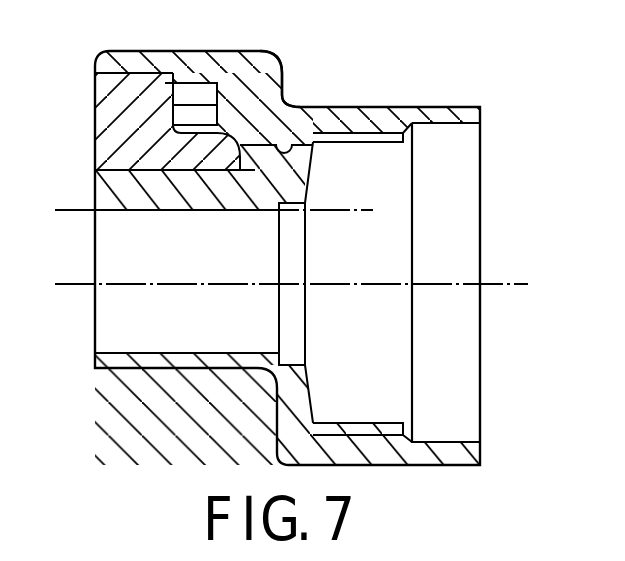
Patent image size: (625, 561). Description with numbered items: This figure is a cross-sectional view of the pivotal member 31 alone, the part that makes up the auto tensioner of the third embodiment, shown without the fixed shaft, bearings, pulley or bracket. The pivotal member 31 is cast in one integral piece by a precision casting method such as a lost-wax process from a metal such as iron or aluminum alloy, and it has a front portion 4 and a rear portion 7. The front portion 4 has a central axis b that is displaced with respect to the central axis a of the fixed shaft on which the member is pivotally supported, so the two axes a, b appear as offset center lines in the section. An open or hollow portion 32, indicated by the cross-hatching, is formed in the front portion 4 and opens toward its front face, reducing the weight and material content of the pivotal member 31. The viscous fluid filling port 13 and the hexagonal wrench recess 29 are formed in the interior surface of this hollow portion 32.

The front portion 4 is at (177, 53).
The hexagonal wrench recess 29 is at (207, 85).
The pivotal member 31 is at (363, 64).
The viscous fluid filling port 13 is at (300, 146).
The rear portion 7 is at (438, 113).
The open or hollow portion 32 is at (108, 113).
The central axis of the fixed shaft a is at (440, 282).
The central axis of the front portion b is at (373, 210).